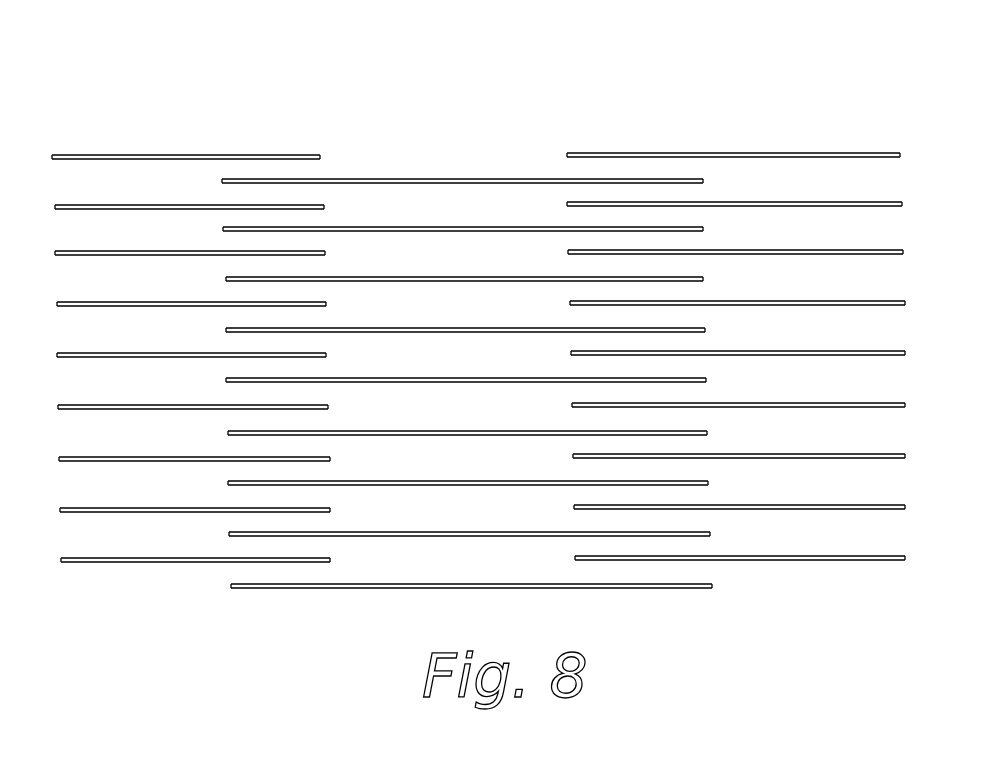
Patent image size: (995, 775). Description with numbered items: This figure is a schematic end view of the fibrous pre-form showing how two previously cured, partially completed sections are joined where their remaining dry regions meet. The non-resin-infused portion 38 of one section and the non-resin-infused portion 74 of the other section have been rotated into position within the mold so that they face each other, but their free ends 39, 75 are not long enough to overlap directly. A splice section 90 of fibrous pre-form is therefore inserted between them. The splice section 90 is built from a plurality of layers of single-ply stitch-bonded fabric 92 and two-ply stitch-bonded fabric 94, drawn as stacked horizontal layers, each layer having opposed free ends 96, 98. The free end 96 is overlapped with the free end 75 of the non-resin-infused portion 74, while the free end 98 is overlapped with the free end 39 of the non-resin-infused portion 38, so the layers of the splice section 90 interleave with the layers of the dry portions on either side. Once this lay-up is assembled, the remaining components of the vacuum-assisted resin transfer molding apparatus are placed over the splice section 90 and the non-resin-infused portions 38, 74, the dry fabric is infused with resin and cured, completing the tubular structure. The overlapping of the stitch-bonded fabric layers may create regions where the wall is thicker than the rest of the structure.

The non-resin-infused portion 74 is at (250, 100).
The free end 75 is at (310, 135).
The free end 96 is at (323, 166).
The splice section 90 is at (422, 135).
The two-ply stitch-bonded fabric 94 is at (452, 180).
The single-ply stitch-bonded fabric 92 is at (450, 227).
The free end 98 is at (557, 167).
The non-resin-infused portion 38 is at (740, 97).
The free end 39 is at (610, 140).